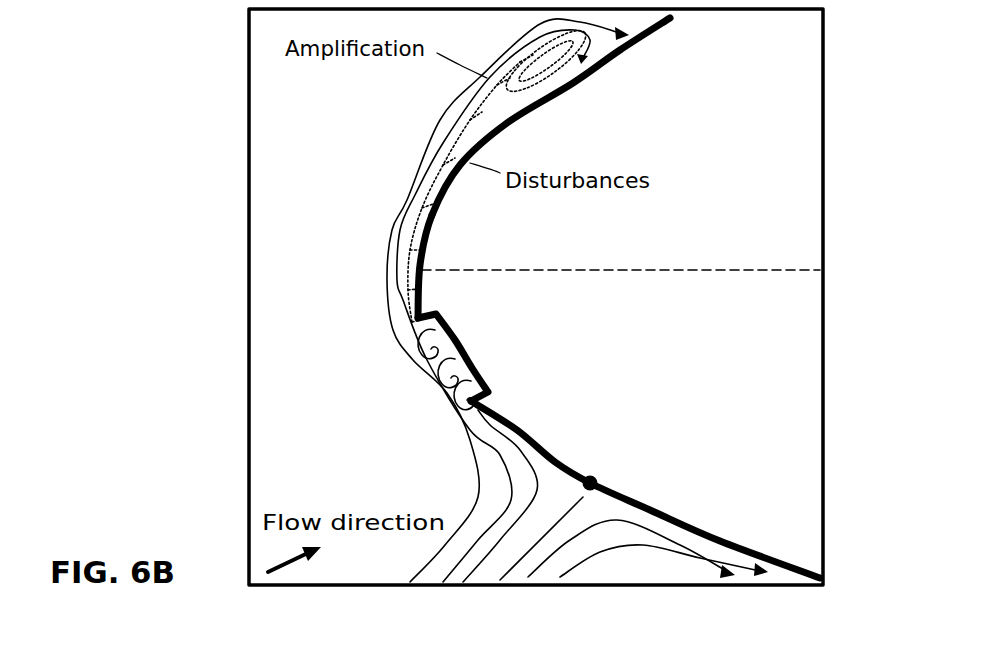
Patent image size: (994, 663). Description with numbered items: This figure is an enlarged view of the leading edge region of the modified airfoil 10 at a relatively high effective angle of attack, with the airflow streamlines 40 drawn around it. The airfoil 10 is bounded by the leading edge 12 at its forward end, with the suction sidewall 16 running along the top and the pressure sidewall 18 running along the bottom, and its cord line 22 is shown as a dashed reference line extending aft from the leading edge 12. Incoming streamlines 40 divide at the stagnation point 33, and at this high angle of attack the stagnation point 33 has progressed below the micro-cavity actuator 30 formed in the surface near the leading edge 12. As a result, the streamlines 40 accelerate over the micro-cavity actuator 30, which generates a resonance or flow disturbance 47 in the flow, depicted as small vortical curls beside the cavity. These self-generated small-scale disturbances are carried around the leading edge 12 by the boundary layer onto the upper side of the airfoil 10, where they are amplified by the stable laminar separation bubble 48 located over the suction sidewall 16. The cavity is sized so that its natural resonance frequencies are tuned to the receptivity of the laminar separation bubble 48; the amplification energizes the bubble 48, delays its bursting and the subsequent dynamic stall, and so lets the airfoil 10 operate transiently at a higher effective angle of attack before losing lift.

The airfoil 10 is at (385, 157).
The leading edge 12 is at (422, 270).
The suction sidewall 16 is at (447, 190).
The pressure sidewall 18 is at (697, 523).
The cord line 22 is at (667, 270).
The micro-cavity actuator 30 is at (455, 348).
The stagnation point 33 is at (601, 477).
The airflow streamlines 40 is at (478, 499).
The flow disturbance 47 is at (440, 363).
The stable laminar separation bubble 48 is at (553, 87).